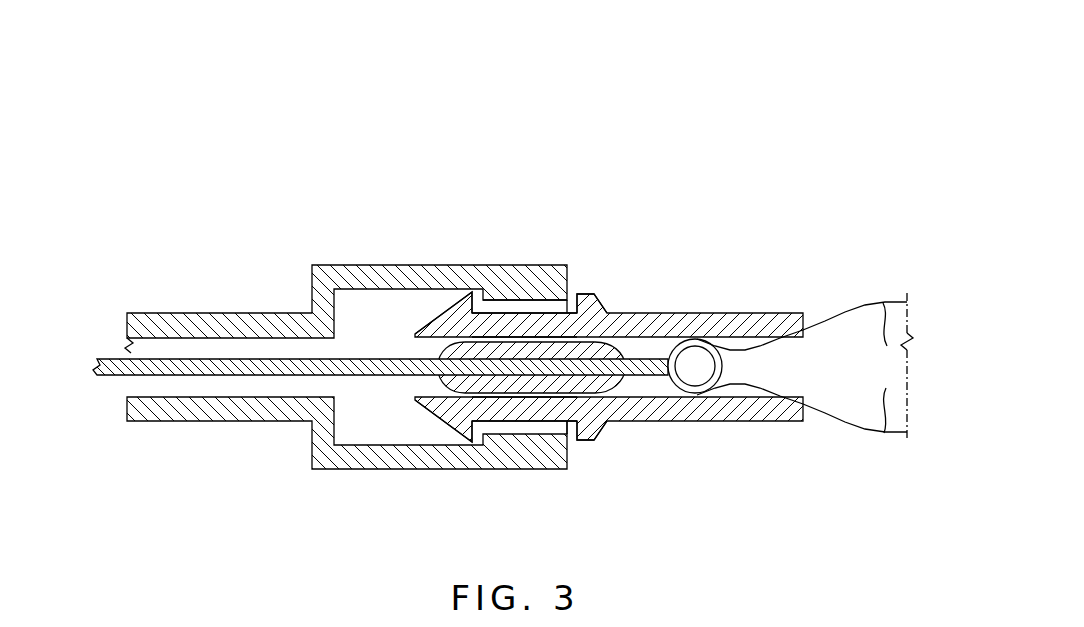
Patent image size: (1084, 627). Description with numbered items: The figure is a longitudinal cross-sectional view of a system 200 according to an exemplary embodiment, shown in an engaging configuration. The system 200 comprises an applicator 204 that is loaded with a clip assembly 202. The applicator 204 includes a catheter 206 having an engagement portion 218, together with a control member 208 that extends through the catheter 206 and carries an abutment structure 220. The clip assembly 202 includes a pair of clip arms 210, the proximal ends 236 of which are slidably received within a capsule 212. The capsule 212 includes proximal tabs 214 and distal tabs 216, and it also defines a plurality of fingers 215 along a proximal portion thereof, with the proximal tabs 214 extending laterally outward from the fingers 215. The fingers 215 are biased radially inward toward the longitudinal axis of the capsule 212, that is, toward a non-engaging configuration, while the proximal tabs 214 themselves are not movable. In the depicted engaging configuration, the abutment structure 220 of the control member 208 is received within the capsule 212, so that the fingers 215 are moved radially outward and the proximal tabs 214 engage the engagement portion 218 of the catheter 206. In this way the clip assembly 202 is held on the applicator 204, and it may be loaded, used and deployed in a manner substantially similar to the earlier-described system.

The system 200 is at (503, 316).
The clip assembly 202 is at (604, 358).
The applicator 204 is at (380, 331).
The catheter 206 is at (385, 263).
The control member 208 is at (195, 359).
The clip arms 210 is at (805, 367).
The capsule 212 is at (565, 409).
The proximal tabs 214 is at (459, 297).
The fingers 215 is at (483, 313).
The distal tabs 216 is at (601, 297).
The engagement portion 218 is at (518, 300).
The abutment structure 220 is at (455, 380).
The proximal ends 236 is at (703, 393).